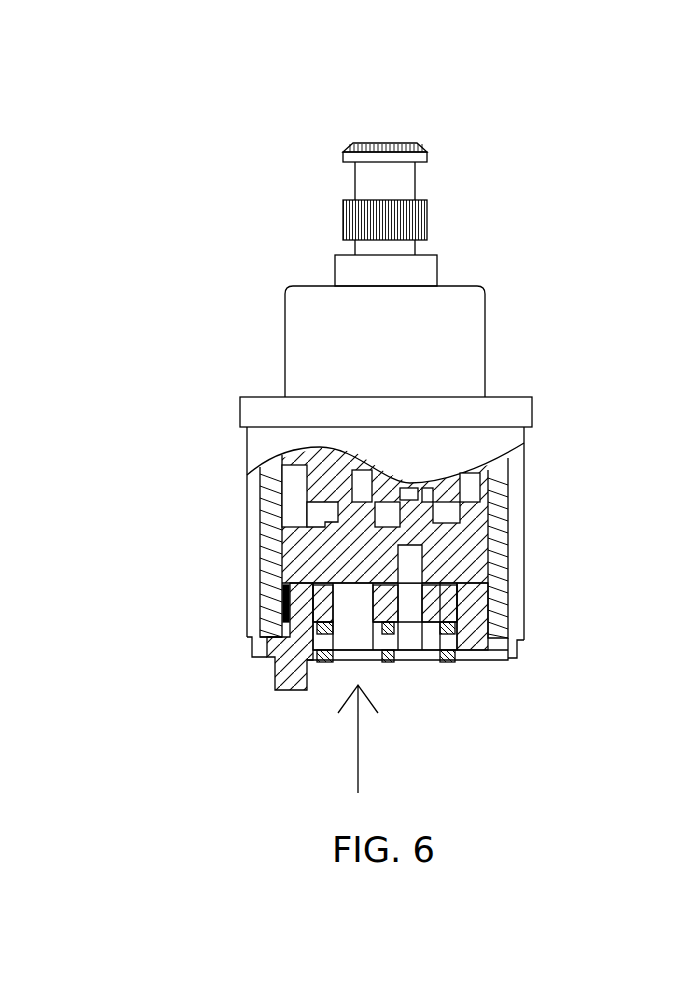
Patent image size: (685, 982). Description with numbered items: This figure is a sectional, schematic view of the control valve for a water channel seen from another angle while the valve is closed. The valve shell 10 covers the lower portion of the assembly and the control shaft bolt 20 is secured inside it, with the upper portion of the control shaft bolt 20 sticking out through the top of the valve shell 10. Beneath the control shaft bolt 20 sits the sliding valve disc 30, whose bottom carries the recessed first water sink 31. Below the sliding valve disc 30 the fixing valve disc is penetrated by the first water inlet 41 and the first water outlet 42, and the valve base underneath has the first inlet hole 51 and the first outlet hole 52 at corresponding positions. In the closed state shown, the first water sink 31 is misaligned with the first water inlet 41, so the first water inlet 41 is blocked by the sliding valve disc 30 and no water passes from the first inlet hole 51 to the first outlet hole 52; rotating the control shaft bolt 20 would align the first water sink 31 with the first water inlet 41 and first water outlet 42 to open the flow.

The valve shell 10 is at (530, 457).
The control shaft bolt 20 is at (343, 196).
The sliding valve disc 30 is at (293, 530).
The first water sink 31 is at (440, 543).
The first water inlet 41 is at (285, 626).
The first water outlet 42 is at (425, 598).
The first inlet hole 51 is at (321, 663).
The first outlet hole 52 is at (451, 663).